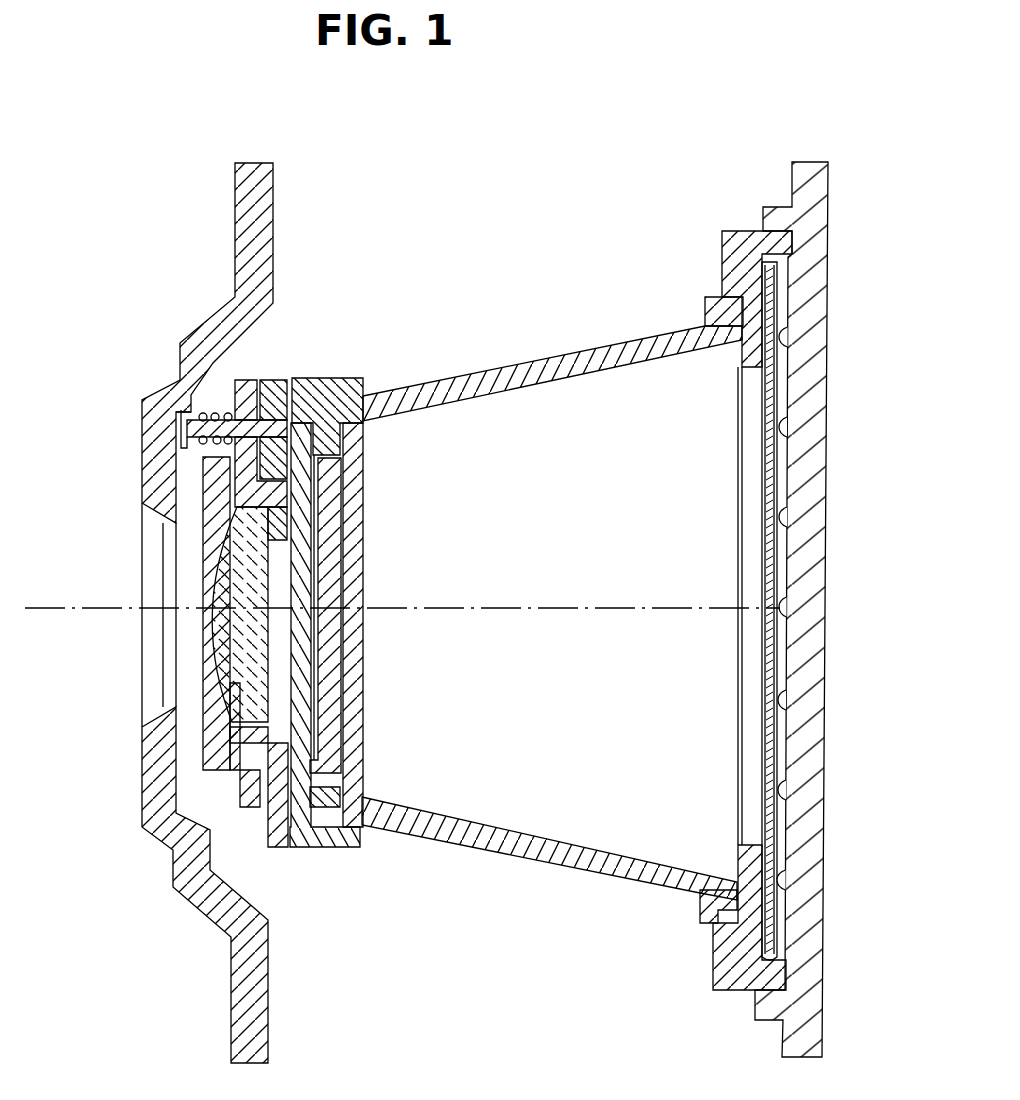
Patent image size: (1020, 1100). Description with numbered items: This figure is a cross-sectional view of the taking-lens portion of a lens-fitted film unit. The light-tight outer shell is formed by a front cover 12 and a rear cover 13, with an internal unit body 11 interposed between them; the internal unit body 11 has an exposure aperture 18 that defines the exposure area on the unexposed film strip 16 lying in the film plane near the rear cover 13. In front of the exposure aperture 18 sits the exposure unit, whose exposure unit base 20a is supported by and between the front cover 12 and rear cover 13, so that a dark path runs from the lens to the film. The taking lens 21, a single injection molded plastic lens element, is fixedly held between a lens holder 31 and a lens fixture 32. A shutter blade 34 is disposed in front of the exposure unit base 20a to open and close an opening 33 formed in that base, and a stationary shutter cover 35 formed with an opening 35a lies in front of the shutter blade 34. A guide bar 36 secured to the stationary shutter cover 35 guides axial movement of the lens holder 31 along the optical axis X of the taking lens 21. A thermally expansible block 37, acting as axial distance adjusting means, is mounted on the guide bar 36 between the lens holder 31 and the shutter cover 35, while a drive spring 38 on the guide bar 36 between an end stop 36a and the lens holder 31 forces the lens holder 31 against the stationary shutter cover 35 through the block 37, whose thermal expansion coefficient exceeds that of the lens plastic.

The internal unit body 11 is at (722, 240).
The front cover 12 is at (236, 233).
The rear cover 13 is at (833, 243).
The unexposed film strip 16 is at (767, 558).
The exposure aperture 18 is at (742, 380).
The exposure unit base 20a is at (585, 352).
The taking lens 21 is at (207, 634).
The lens holder 31 is at (287, 848).
The lens fixture 32 is at (217, 775).
The opening 33 is at (350, 545).
The shutter blade 34 is at (341, 645).
The stationary shutter cover 35 is at (342, 848).
The opening 35a is at (303, 622).
The guide bar 36 is at (163, 452).
The end stop 36a is at (179, 412).
The thermally expansible block 37 is at (282, 378).
The drive spring 38 is at (216, 410).
The optical axis X is at (588, 612).